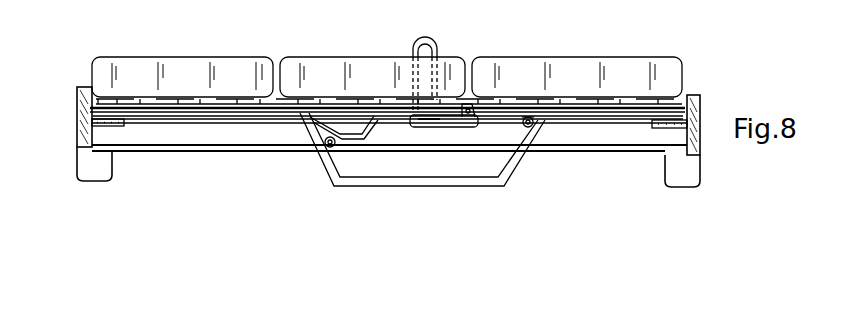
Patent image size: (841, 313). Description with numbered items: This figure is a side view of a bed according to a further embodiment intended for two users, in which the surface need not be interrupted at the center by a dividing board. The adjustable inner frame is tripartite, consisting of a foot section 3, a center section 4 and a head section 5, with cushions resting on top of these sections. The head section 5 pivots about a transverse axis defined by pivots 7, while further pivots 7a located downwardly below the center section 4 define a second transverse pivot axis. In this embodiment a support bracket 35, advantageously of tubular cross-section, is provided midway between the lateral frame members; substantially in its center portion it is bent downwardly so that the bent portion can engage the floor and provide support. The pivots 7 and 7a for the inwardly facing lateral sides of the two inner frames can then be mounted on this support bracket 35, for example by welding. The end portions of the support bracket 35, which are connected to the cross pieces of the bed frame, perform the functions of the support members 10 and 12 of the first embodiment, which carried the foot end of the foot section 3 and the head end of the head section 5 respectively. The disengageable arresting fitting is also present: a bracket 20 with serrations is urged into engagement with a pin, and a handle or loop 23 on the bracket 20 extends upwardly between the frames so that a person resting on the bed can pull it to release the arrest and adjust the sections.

The foot section 3 is at (213, 102).
The center section 4 is at (392, 112).
The head section 5 is at (612, 114).
The pivots 7 is at (534, 126).
The pivots 7a is at (327, 146).
The support members 10 is at (108, 118).
The support members 12 is at (662, 129).
The bracket 20 is at (433, 128).
The handle or loop 23 is at (437, 41).
The support bracket 35 is at (508, 170).